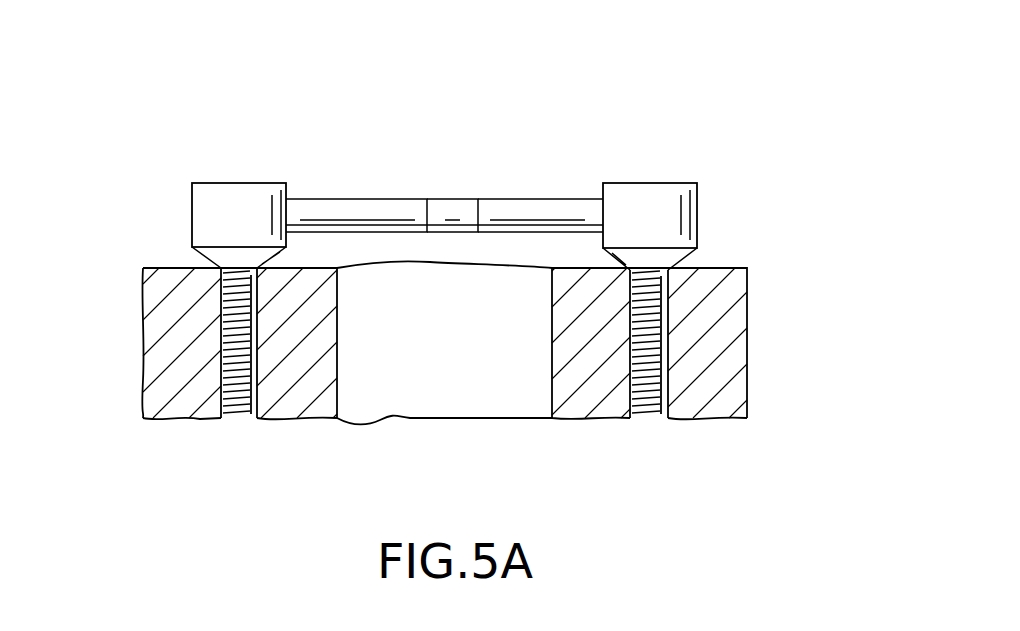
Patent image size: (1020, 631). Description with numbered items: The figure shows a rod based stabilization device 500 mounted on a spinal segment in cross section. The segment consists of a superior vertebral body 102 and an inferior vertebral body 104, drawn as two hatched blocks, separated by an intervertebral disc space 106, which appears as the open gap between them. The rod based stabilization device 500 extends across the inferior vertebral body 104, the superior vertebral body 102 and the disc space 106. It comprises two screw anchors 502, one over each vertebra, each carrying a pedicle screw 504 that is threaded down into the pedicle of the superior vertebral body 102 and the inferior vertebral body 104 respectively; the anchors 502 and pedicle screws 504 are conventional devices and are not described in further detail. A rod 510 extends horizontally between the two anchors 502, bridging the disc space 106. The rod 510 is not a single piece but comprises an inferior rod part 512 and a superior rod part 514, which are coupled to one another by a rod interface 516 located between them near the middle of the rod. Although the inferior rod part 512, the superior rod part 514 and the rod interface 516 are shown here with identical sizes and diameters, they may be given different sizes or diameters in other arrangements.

The rod based stabilization device 500 is at (875, 264).
The superior vertebral body 102 is at (730, 390).
The inferior vertebral body 104 is at (165, 360).
The intervertebral disc space 106 is at (415, 383).
The screw anchor 502 is at (192, 208).
The pedicle screw 504 is at (222, 288).
The rod 510 is at (590, 122).
The inferior rod part 512 is at (343, 206).
The superior rod part 514 is at (535, 206).
The rod interface 516 is at (450, 206).